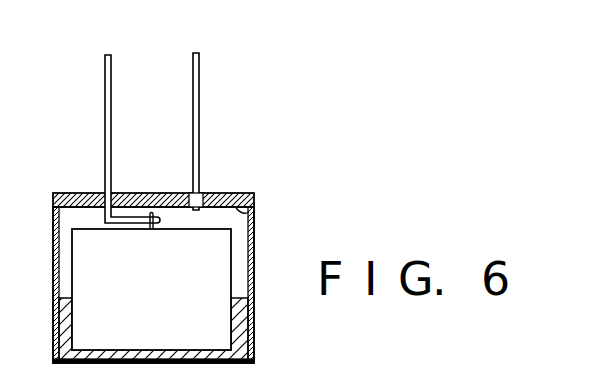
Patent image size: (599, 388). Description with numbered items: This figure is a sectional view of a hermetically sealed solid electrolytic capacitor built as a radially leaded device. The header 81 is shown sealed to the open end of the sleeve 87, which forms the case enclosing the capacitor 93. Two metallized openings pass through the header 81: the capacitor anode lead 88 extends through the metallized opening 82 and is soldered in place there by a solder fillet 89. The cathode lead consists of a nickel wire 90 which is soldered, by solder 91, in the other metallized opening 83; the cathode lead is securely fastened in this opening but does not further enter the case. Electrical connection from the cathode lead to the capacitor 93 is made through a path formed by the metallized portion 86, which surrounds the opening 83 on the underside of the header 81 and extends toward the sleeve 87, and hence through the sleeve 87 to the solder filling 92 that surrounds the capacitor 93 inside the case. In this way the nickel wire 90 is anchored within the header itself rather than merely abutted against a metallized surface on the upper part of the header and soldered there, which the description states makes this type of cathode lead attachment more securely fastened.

The header 81 is at (255, 194).
The metallized opening 82 is at (100, 192).
The metallized opening 83 is at (187, 192).
The metallized portion 86 is at (250, 210).
The sleeve 87 is at (255, 240).
The capacitor anode lead 88 is at (105, 98).
The solder fillet 89 is at (113, 192).
The nickel wire 90 is at (199, 89).
The solder 91 is at (200, 192).
The solder filling 92 is at (243, 340).
The capacitor 93 is at (165, 299).